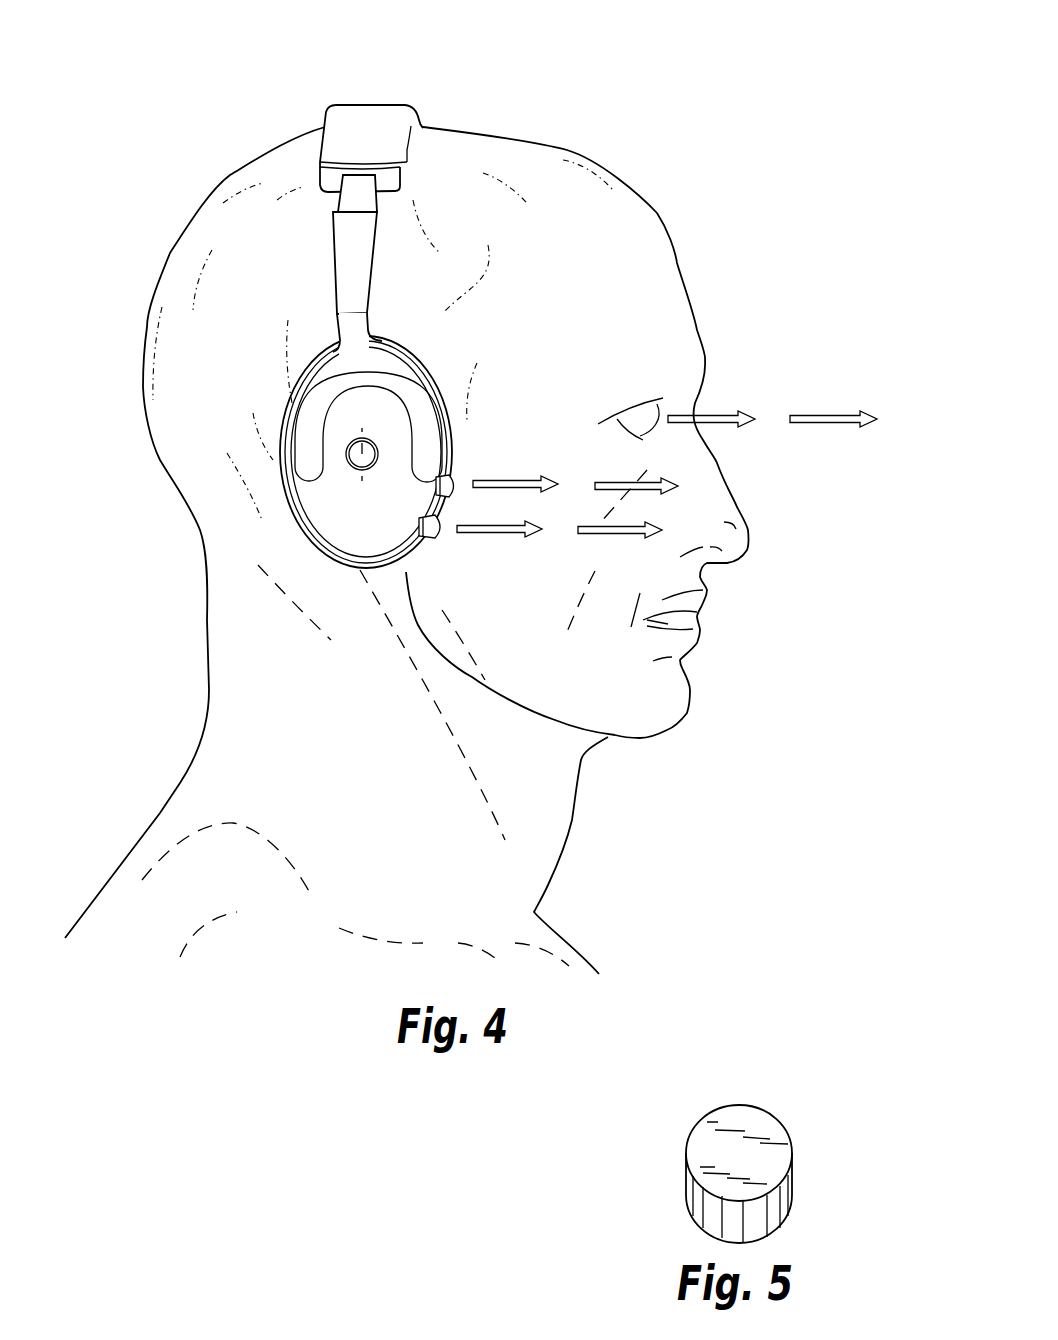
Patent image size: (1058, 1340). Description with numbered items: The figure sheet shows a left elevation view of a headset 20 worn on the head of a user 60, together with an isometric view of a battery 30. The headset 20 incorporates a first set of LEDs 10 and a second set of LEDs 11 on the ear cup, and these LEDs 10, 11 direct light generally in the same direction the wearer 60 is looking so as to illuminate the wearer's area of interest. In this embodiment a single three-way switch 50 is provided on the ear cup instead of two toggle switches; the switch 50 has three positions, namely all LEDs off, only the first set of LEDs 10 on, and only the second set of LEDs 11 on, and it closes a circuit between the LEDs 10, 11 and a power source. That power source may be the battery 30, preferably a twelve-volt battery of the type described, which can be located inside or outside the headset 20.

In FIG. 4, the first set of LEDs 10 is at (434, 538).
In FIG. 4, the second set of LEDs 11 is at (456, 479).
In FIG. 4, the headset 20 is at (345, 74).
In FIG. 5, the battery 30 is at (790, 1099).
In FIG. 4, the switch 50 is at (348, 466).
In FIG. 4, the user 60 is at (680, 156).